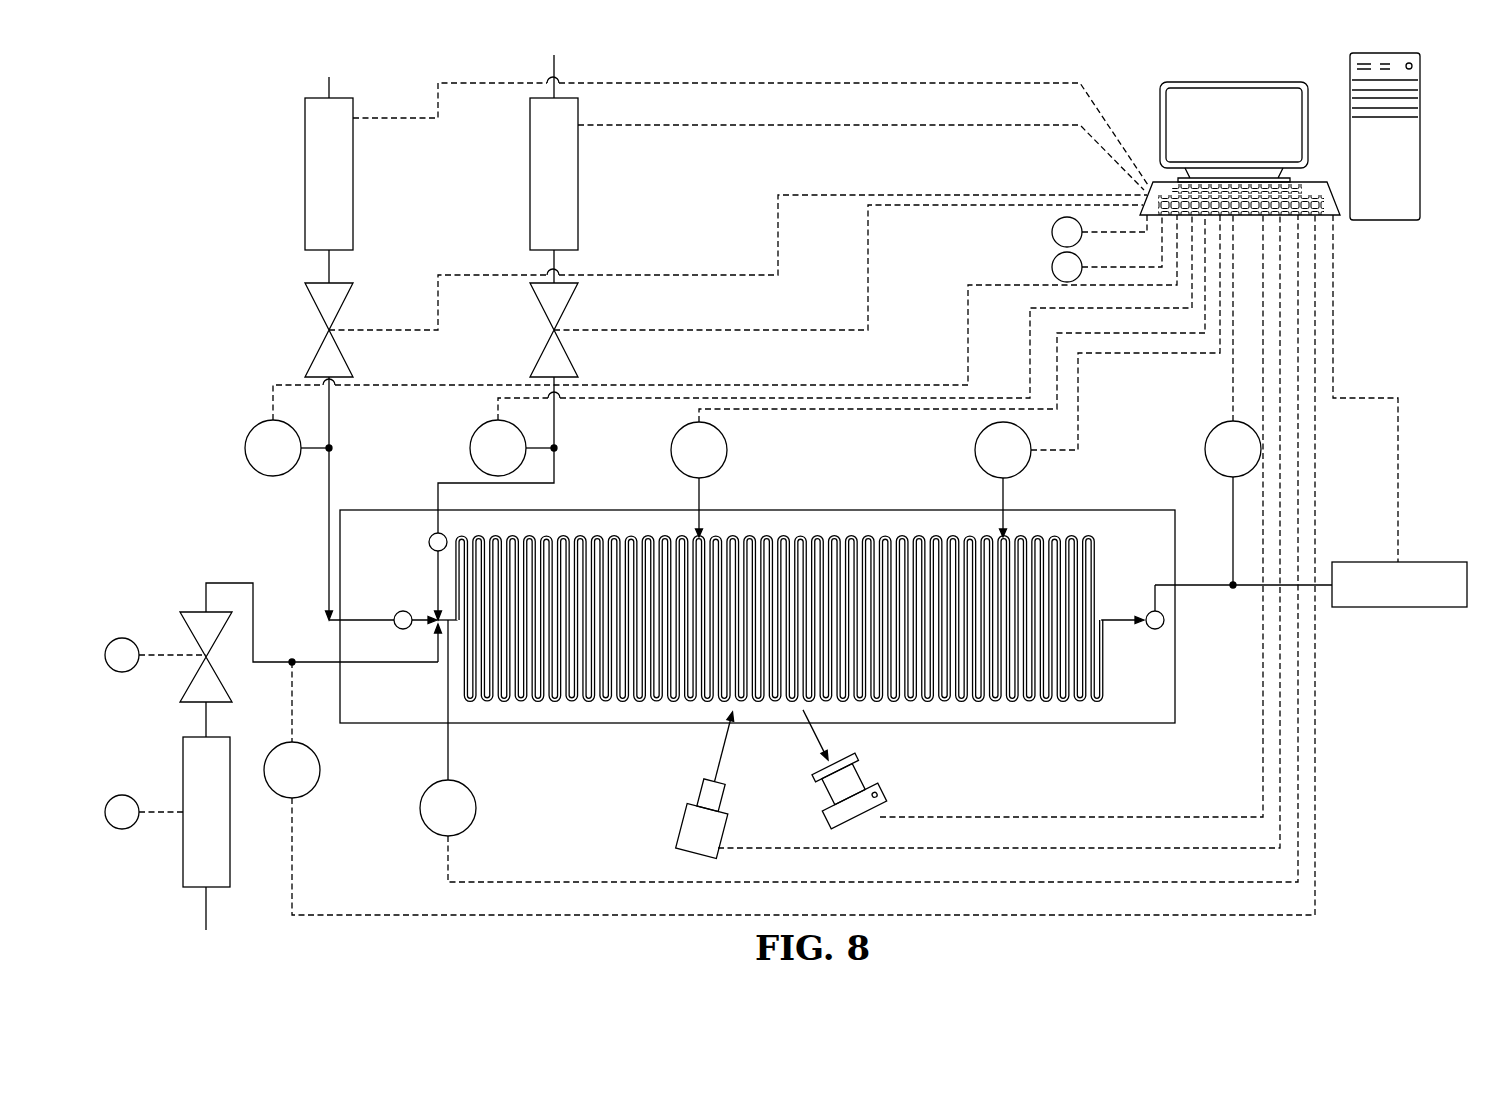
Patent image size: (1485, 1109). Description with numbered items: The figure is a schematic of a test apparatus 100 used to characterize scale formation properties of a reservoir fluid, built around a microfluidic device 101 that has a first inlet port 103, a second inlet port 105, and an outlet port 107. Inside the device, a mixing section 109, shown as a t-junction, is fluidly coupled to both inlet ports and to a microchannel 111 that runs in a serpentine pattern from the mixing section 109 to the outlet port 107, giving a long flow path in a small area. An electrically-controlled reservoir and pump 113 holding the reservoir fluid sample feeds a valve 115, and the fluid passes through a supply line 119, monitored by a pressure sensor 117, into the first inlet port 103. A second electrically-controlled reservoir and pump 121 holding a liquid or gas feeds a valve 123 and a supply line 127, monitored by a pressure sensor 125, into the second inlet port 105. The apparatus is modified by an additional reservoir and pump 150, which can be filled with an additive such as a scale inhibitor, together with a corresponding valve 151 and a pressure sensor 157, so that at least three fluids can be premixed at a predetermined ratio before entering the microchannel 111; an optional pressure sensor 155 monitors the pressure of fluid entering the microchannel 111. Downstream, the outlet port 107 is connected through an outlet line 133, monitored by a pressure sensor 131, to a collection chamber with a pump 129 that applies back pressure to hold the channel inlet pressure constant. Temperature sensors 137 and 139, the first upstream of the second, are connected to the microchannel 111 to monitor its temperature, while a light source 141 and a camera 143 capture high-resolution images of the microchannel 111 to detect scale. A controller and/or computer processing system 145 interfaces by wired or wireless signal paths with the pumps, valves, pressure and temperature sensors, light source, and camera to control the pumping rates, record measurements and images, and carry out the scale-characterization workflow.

The test apparatus 100 is at (1352, 801).
The microfluidic device 101 is at (606, 723).
The first inlet port 103 is at (400, 610).
The second inlet port 105 is at (432, 536).
The outlet port 107 is at (1162, 628).
The mixing section 109 is at (423, 616).
The microchannel 111 is at (852, 537).
The reservoir and pump 113 is at (305, 172).
The valve 115 is at (315, 352).
The pressure sensor 117 is at (245, 448).
The supply line 119 is at (329, 512).
The reservoir and pump 121 is at (530, 172).
The valve 123 is at (552, 345).
The pressure sensor 125 is at (470, 448).
The supply line 127 is at (554, 448).
The collection chamber with pump 129 is at (1365, 562).
The pressure sensor 131 is at (1205, 448).
The outlet line 133 is at (1205, 585).
The temperature sensor 137 is at (672, 445).
The temperature sensor 139 is at (975, 448).
The light source 141 is at (680, 826).
The camera 143 is at (822, 822).
The controller and/or computer processing system 145 is at (1190, 82).
The reservoir and pump 150 is at (183, 762).
The valve 151 is at (195, 632).
The pressure sensor 155 is at (476, 808).
The pressure sensor 157 is at (320, 770).